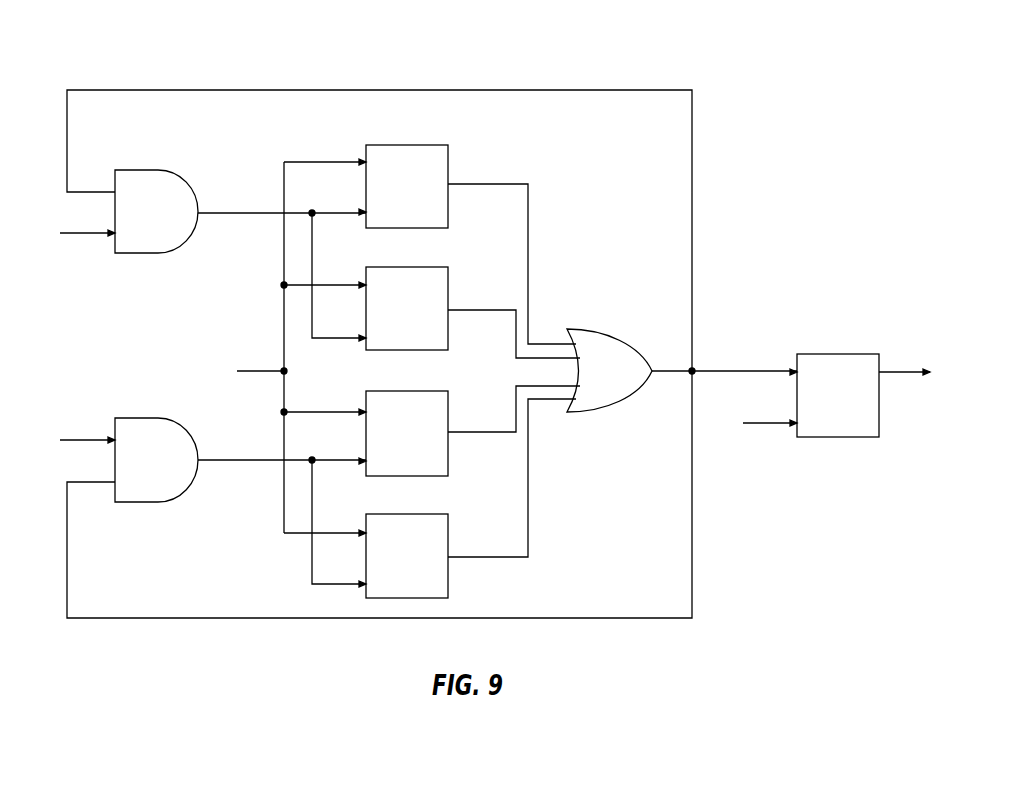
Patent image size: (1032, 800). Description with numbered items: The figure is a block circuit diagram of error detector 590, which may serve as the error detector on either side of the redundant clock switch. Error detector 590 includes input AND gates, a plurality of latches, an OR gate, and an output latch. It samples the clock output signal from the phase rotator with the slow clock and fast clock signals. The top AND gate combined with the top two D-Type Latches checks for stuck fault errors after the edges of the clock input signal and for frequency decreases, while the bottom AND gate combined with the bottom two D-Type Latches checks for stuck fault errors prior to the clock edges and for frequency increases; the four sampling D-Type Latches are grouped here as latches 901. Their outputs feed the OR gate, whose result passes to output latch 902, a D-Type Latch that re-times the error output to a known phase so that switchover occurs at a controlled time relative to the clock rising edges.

The error detector 590 is at (473, 323).
The D-type latches (sampling) 901 is at (415, 371).
The D-type latch (error output) 902 is at (846, 397).